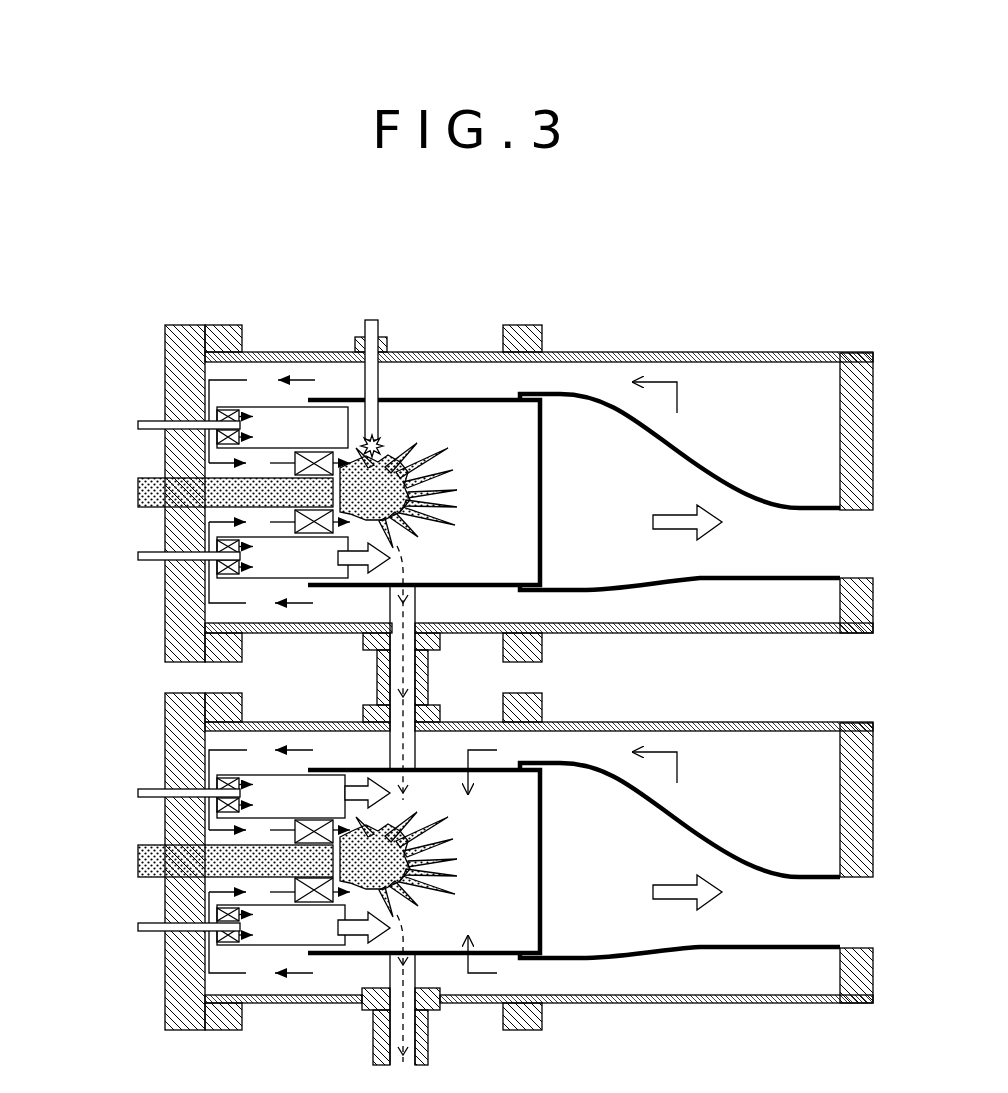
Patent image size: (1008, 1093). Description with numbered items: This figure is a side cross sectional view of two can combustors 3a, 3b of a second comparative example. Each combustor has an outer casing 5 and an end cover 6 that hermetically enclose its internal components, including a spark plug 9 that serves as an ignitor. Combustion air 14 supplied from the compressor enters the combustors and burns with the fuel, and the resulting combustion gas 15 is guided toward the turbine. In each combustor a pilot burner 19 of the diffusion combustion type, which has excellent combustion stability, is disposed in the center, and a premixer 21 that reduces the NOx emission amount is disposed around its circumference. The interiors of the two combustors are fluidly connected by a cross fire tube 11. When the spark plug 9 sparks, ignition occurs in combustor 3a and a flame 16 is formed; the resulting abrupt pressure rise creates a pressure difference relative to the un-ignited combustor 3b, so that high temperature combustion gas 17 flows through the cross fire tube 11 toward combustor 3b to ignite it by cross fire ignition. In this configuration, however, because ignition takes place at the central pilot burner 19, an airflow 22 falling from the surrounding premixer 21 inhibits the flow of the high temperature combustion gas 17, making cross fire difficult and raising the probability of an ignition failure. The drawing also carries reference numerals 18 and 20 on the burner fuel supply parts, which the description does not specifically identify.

The combustor 3a is at (462, 506).
The combustor 3b is at (496, 879).
The outer casing 5 is at (431, 350).
The end cover 6 is at (194, 323).
The spark plug 9 is at (373, 318).
The cross fire tube 11 is at (433, 654).
The combustion air 14 is at (656, 377).
The combustion gas 15 is at (712, 506).
The flame 16 is at (398, 495).
The high temperature combustion gas 17 is at (410, 566).
The fuel nozzle 18 is at (148, 480).
The pilot burner 19 is at (318, 535).
The fuel supply pipe 20 is at (140, 422).
The premixer 21 is at (272, 423).
The airflow 22 is at (355, 567).